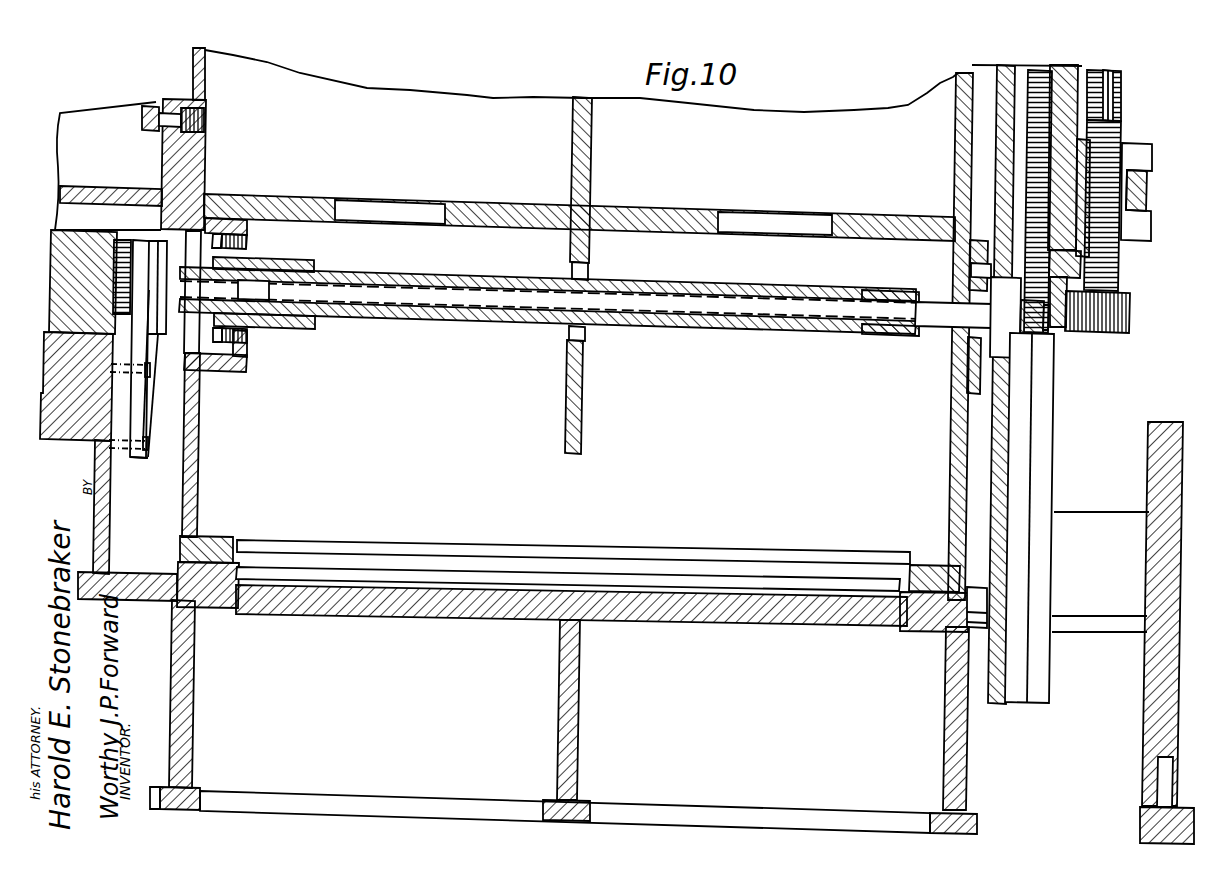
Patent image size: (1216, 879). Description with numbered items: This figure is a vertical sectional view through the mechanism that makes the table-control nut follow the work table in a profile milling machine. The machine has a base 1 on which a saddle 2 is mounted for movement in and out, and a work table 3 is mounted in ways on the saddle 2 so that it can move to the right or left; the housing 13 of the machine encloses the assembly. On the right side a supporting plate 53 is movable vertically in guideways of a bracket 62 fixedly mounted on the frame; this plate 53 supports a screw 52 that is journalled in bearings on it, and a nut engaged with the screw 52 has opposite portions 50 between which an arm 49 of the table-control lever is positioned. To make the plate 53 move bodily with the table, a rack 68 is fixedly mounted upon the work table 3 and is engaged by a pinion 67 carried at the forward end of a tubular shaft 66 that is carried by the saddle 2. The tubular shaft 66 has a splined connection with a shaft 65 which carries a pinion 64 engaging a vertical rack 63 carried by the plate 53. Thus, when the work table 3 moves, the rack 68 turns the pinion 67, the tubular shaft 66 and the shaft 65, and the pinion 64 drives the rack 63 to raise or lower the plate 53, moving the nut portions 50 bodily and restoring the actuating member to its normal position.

The base 1 is at (187, 769).
The saddle 2 is at (106, 461).
The work table 3 is at (79, 248).
The housing 13 is at (913, 127).
The arm 49 is at (1148, 193).
The opposite portions of nut 50 is at (1151, 156).
The screw 52 is at (1126, 134).
The supporting plate 53 is at (1122, 81).
The bracket 62 is at (1048, 461).
The vertical rack 63 is at (1038, 173).
The pinion 64 is at (1028, 339).
The shaft 65 is at (941, 314).
The tubular shaft 66 is at (461, 313).
The pinion 67 is at (142, 263).
The rack 68 is at (127, 240).